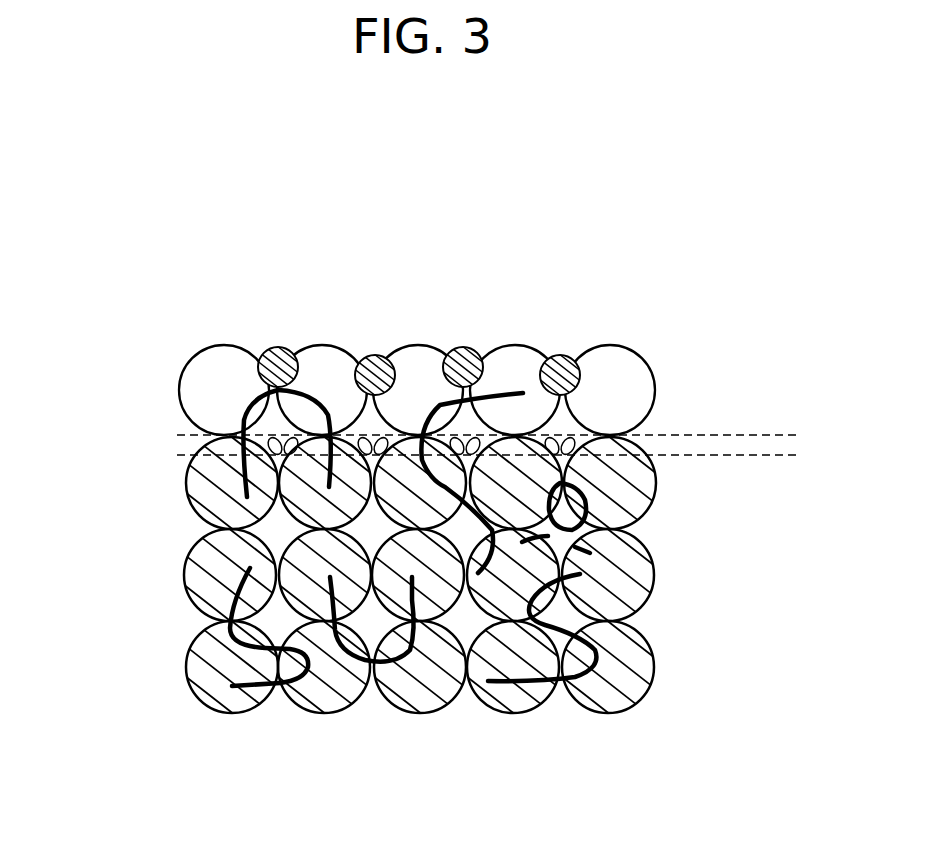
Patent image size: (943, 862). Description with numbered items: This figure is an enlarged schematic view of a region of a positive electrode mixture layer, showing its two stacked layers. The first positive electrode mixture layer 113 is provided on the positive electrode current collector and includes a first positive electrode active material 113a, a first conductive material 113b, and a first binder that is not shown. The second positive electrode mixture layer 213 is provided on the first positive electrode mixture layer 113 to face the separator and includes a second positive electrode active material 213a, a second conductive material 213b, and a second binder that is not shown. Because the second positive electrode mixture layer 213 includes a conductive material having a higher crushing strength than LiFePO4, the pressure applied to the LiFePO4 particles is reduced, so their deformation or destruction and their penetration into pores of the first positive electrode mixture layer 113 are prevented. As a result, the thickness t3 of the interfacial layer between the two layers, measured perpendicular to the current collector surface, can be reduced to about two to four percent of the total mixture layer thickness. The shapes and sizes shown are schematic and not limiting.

The first positive electrode mixture layer 113 is at (167, 440).
The first positive electrode active material 113a is at (630, 547).
The first conductive material 113b is at (247, 400).
The second positive electrode mixture layer 213 is at (167, 342).
The second positive electrode active material 213a is at (214, 360).
The second conductive material 213b is at (455, 348).
The thickness of the interfacial layer t3 is at (788, 398).